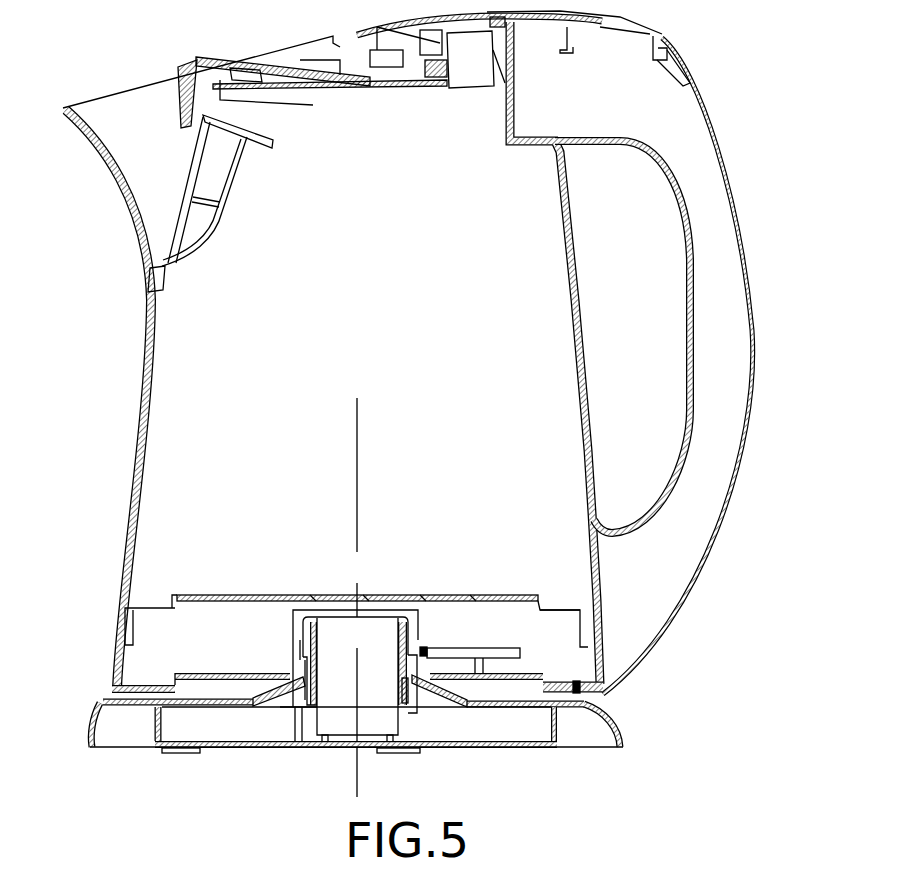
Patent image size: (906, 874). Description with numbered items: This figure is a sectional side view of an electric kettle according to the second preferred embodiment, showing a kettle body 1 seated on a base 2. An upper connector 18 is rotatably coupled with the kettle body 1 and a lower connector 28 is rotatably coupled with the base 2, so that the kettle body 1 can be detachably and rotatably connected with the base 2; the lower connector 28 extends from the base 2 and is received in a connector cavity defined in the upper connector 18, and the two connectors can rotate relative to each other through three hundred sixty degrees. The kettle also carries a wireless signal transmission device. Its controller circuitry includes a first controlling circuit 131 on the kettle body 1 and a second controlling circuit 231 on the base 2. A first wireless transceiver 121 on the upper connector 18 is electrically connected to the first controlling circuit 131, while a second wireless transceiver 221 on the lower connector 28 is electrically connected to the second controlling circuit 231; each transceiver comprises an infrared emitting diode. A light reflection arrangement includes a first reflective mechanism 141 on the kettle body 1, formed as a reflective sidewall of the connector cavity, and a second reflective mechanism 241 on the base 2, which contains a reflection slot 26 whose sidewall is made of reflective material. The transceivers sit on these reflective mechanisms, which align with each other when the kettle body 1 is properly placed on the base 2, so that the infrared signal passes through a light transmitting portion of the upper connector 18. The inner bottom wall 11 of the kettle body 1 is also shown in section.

The kettle body 1 is at (127, 420).
The base 2 is at (517, 748).
The bottom wall 11 is at (267, 595).
The upper connector 18 is at (417, 627).
The lower connector 28 is at (400, 675).
The reflection slot 26 is at (407, 650).
The first wireless transceiver 121 is at (423, 648).
The first controlling circuit 131 is at (520, 659).
The first reflective mechanism 141 is at (307, 648).
The second reflective mechanism 241 is at (307, 645).
The second wireless transceiver 221 is at (307, 650).
The second controlling circuit 231 is at (310, 706).